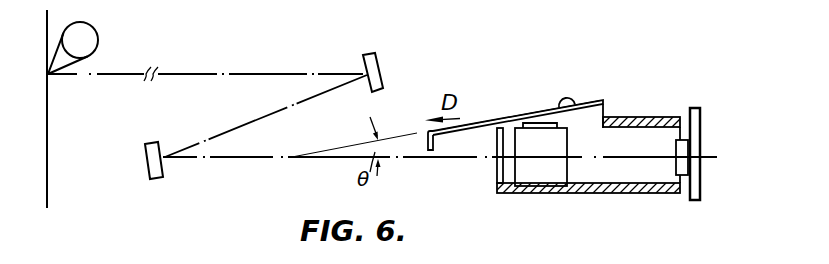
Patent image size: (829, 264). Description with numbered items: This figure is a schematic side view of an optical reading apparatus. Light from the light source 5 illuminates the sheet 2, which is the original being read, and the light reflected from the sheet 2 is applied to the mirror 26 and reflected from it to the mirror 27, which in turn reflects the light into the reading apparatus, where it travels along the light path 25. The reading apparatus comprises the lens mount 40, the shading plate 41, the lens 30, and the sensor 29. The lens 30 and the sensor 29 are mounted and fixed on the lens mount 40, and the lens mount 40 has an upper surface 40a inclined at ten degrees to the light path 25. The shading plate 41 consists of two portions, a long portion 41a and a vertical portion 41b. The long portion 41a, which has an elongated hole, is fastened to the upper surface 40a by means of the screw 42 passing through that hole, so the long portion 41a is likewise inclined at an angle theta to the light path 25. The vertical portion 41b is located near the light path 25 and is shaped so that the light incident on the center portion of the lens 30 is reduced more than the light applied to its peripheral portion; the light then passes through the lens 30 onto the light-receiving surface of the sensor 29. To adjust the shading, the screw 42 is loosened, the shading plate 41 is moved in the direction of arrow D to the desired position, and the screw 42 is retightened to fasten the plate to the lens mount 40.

The sheet 2 is at (49, 163).
The light source 5 is at (88, 39).
The light path 25 is at (265, 160).
The mirror 26 is at (382, 63).
The mirror 27 is at (163, 180).
The sensor 29 is at (683, 165).
The lens 30 is at (548, 167).
The lens mount 40 is at (652, 116).
The upper surface 40a is at (503, 160).
The shading plate 41 is at (469, 124).
The long portion 41a is at (510, 117).
The vertical portion 41b is at (430, 151).
The screw 42 is at (572, 95).